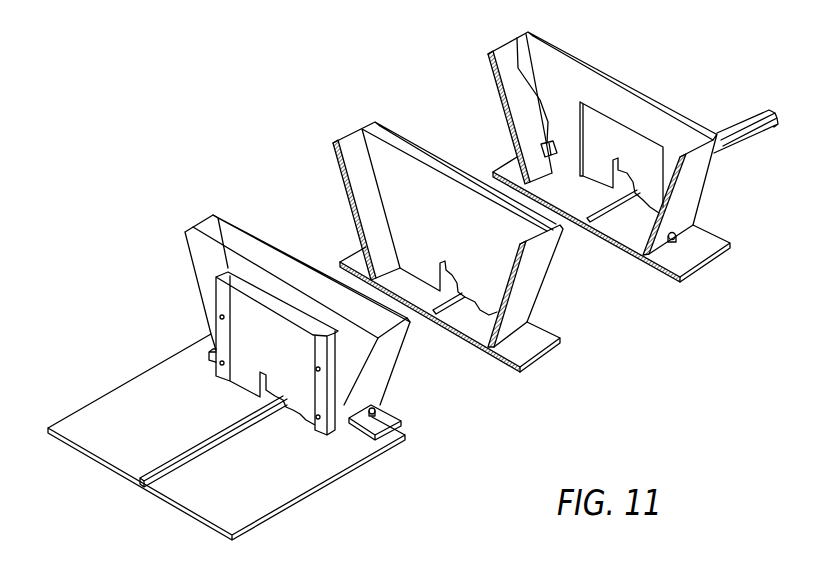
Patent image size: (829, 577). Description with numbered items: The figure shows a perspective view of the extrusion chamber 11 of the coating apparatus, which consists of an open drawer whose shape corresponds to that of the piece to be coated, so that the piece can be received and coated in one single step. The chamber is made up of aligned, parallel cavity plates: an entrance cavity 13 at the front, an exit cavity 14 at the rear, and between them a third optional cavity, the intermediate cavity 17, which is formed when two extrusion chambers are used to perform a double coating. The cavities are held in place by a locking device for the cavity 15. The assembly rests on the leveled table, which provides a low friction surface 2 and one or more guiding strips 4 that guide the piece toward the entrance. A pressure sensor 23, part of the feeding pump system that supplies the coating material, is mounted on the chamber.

The low friction surface 2 is at (240, 510).
The guiding strip 4 is at (221, 438).
The extrusion chamber 11 is at (685, 182).
The entrance cavity 13 is at (279, 359).
The exit cavity 14 is at (644, 173).
The locking device for the cavity 15 is at (350, 422).
The intermediate cavity 17 is at (462, 247).
The pressure sensor 23 is at (540, 152).